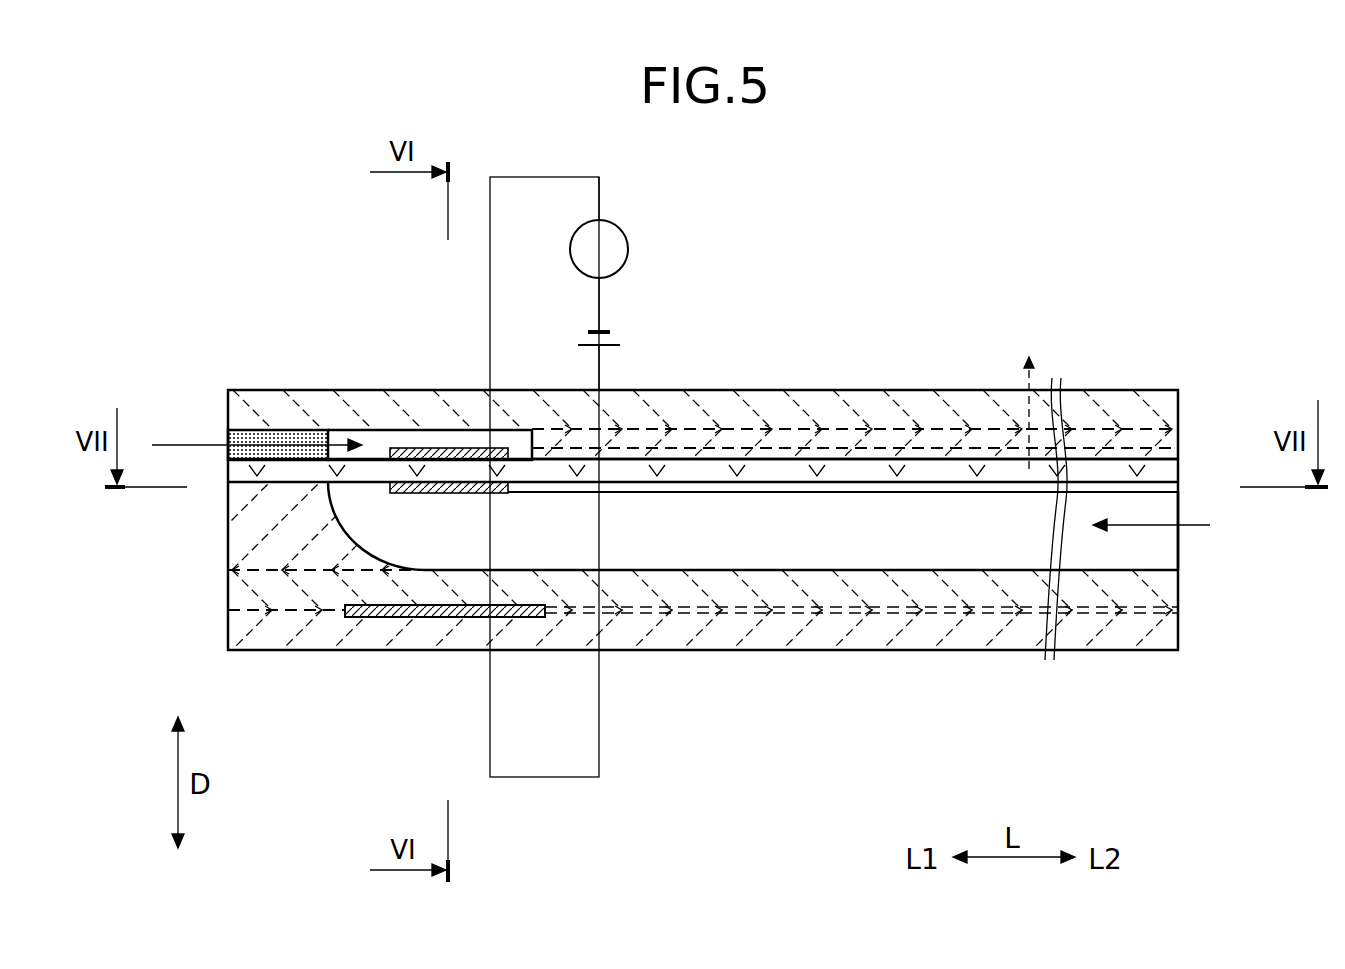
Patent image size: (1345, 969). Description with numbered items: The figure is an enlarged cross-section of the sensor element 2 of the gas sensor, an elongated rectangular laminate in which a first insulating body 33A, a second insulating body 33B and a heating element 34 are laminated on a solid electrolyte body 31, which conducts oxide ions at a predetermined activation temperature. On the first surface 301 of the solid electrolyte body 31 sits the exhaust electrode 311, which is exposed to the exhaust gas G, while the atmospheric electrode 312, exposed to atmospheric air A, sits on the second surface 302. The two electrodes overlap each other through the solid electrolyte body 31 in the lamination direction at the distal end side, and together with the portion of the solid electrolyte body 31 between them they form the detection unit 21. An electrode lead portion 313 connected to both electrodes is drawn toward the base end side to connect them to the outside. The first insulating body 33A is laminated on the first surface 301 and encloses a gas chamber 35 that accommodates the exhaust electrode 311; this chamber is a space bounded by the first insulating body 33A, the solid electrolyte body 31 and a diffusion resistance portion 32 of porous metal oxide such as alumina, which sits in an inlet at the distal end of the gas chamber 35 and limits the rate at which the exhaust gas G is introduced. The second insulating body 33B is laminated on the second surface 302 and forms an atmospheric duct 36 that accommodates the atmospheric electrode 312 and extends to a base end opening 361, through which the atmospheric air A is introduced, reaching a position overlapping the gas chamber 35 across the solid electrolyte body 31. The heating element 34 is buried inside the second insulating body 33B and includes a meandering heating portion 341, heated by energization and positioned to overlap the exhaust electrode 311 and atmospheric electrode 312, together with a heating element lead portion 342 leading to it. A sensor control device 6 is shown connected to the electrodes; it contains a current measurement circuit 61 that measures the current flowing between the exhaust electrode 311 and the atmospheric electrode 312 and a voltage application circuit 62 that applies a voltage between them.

The sensor element 2 is at (1120, 690).
The detection unit 21 is at (457, 370).
The sensor control device 6 is at (649, 271).
The current measurement circuit 61 is at (625, 237).
The voltage application circuit 62 is at (614, 343).
The solid electrolyte body 31 is at (792, 470).
The first surface 301 is at (950, 457).
The second surface 302 is at (962, 495).
The exhaust electrode 311 is at (420, 450).
The atmospheric electrode 312 is at (420, 487).
The electrode lead portion 313 is at (1007, 487).
The diffusion resistance portion 32 is at (273, 437).
The first insulating body 33A is at (880, 407).
The second insulating body 33B is at (282, 540).
The heating element 34 is at (518, 617).
The heating portion 341 is at (430, 617).
The heating element lead portion 342 is at (880, 612).
The gas chamber 35 is at (380, 442).
The atmospheric duct 36 is at (698, 530).
The base end opening 361 is at (1180, 547).
The exhaust gas G is at (195, 445).
The atmospheric air A is at (1195, 525).